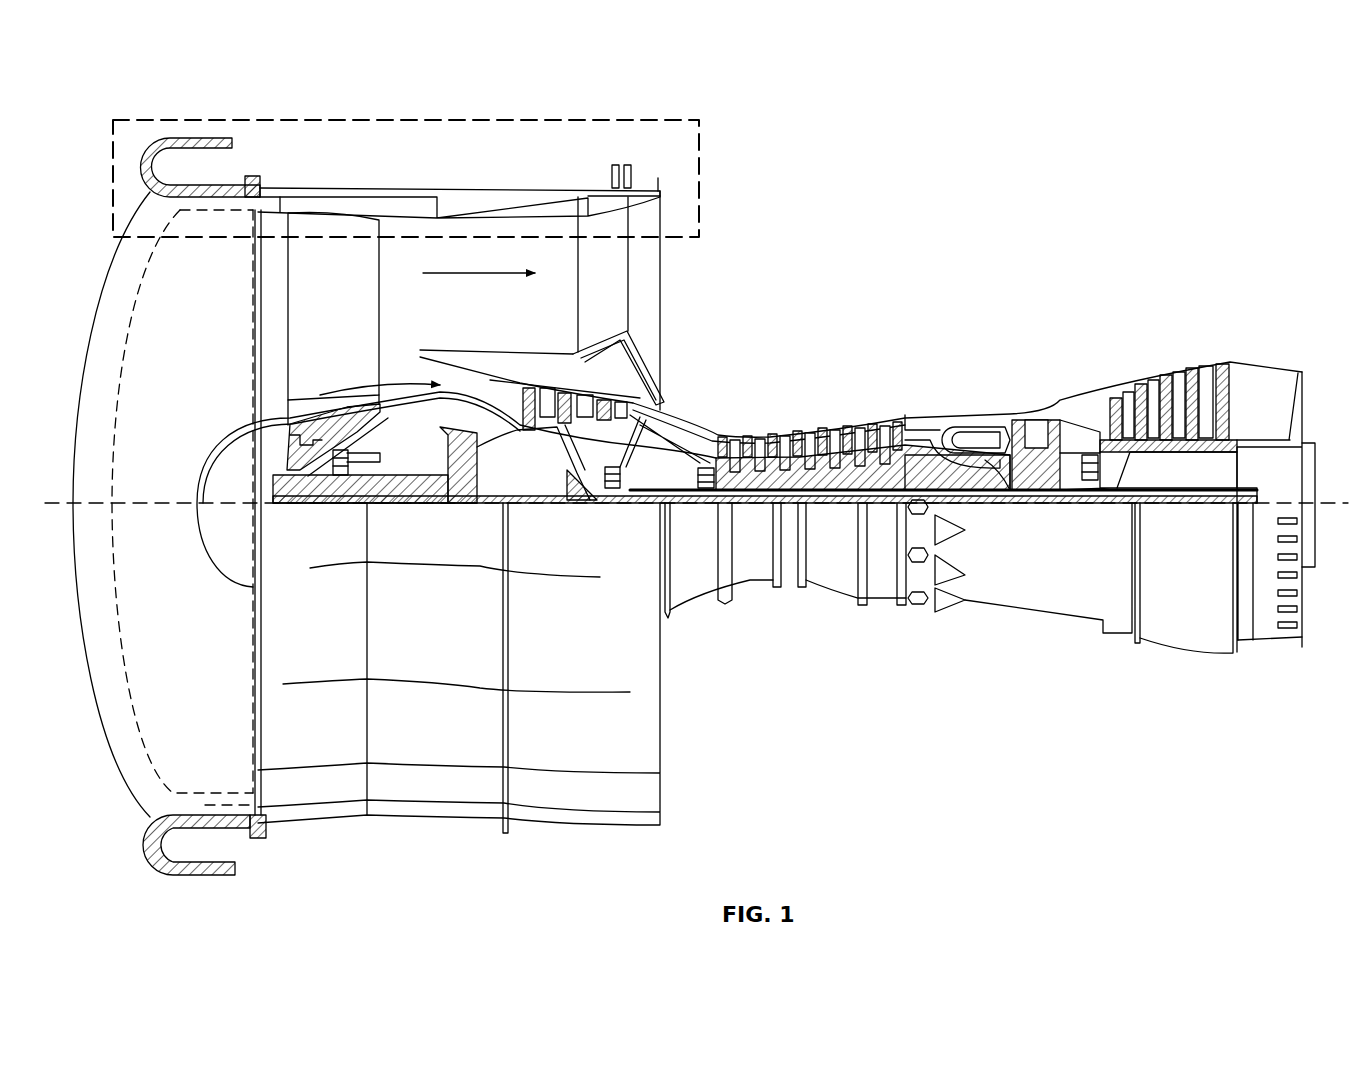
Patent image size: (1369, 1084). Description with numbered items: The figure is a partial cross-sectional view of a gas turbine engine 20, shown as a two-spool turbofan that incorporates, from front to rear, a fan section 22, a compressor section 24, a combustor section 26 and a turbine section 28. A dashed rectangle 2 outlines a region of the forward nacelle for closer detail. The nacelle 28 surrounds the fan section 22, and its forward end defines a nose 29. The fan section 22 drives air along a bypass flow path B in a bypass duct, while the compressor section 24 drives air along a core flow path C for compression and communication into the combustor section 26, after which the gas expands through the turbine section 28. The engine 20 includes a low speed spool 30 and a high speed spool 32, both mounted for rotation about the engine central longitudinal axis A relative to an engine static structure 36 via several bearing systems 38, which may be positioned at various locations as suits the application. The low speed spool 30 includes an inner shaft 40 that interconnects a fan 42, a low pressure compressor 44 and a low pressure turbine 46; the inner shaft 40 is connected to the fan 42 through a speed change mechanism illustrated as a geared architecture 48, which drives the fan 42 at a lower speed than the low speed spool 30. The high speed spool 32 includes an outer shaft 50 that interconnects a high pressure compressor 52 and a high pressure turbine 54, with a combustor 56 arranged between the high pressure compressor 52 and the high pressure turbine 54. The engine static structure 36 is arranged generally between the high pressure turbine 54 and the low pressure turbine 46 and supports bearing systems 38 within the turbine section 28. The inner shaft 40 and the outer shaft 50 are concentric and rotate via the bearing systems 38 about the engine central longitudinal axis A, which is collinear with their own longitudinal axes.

The region of detail (FIG. 2) 2 is at (655, 118).
The gas turbine engine 20 is at (1150, 218).
The fan section 22 is at (372, 174).
The compressor section 24 is at (793, 326).
The combustor section 26 is at (1002, 376).
The turbine section 28 is at (188, 138).
The nose 29 is at (140, 170).
The low speed spool 30 is at (850, 508).
The high speed spool 32 is at (905, 450).
The engine static structure 36 is at (885, 610).
The bearing systems 38 is at (342, 480).
The inner shaft 40 is at (680, 503).
The fan 42 is at (347, 303).
The low pressure compressor 44 is at (560, 385).
The low pressure turbine 46 is at (1175, 395).
The geared architecture 48 is at (462, 495).
The outer shaft 50 is at (995, 490).
The high pressure compressor 52 is at (800, 455).
The high pressure turbine 54 is at (1038, 420).
The combustor 56 is at (980, 440).
The engine central longitudinal axis A is at (1322, 500).
The bypass flow path B is at (478, 272).
The core flow path C is at (375, 392).